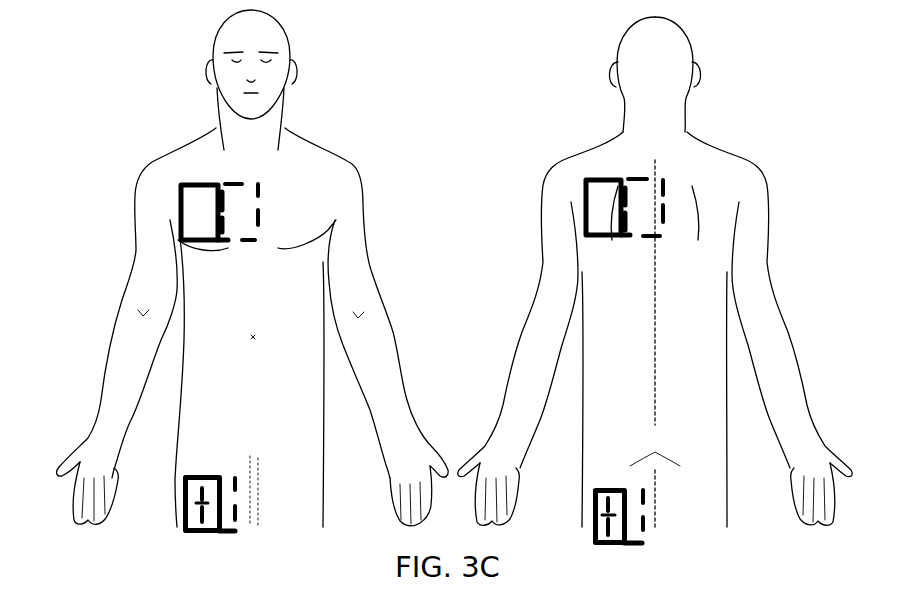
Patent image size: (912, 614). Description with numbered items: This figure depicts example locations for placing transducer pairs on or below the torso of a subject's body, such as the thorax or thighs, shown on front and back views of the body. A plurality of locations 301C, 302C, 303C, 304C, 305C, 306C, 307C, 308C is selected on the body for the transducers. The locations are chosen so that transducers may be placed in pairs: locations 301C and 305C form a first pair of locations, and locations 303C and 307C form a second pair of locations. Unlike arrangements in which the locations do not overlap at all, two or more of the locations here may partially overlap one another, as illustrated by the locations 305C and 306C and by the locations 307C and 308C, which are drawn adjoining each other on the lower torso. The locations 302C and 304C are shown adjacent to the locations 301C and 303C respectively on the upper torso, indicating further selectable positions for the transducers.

The transducer location 301C is at (200, 183).
The transducer location 302C is at (263, 197).
The transducer location 303C is at (585, 192).
The transducer location 304C is at (668, 182).
The transducer location 305C is at (593, 515).
The transducer location 306C is at (645, 497).
The transducer location 307C is at (183, 508).
The transducer location 308C is at (235, 488).